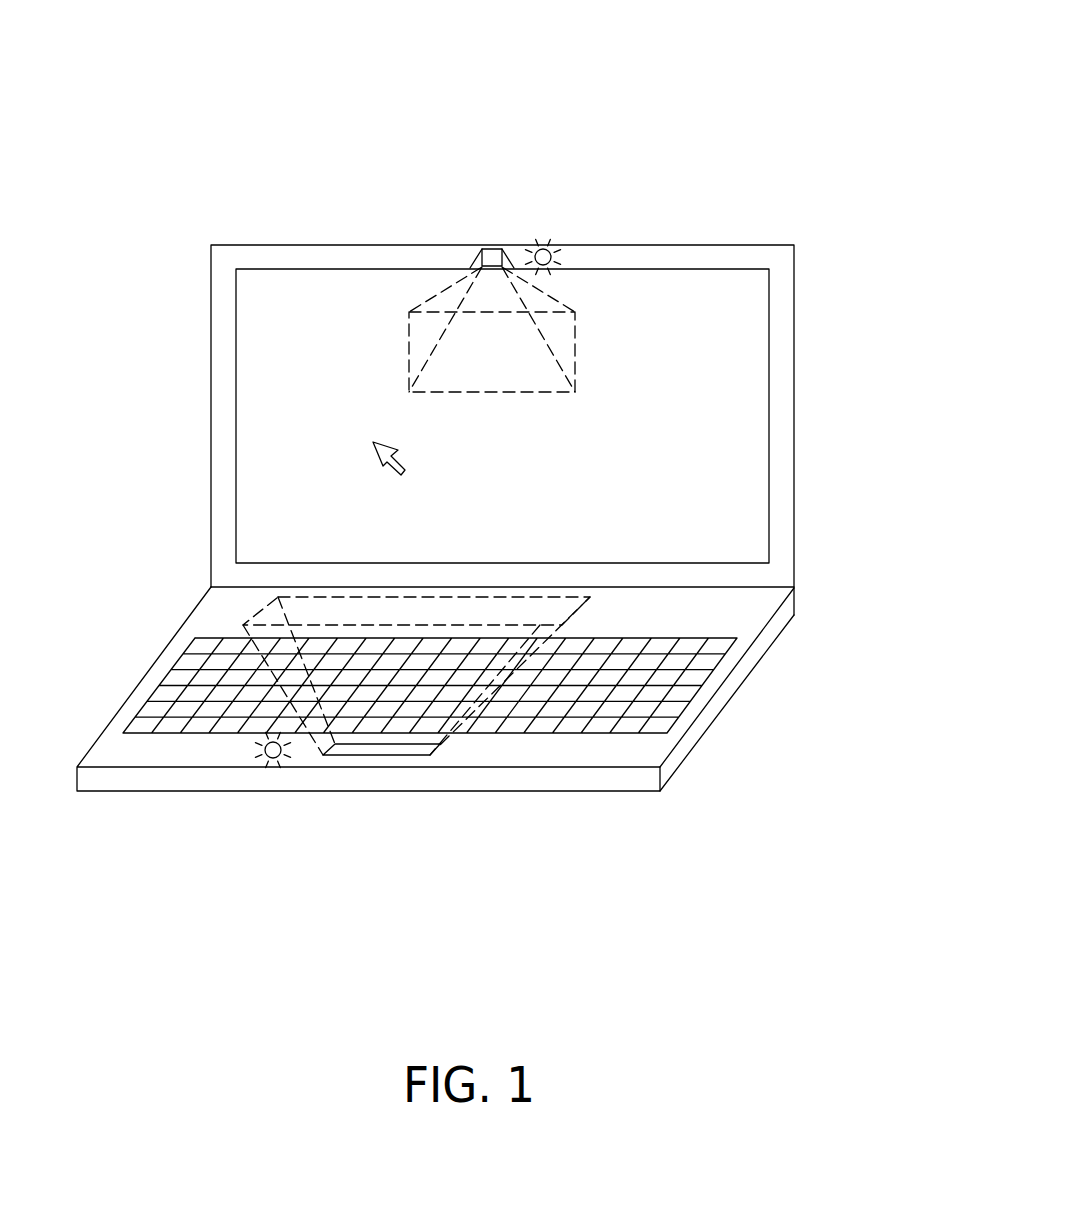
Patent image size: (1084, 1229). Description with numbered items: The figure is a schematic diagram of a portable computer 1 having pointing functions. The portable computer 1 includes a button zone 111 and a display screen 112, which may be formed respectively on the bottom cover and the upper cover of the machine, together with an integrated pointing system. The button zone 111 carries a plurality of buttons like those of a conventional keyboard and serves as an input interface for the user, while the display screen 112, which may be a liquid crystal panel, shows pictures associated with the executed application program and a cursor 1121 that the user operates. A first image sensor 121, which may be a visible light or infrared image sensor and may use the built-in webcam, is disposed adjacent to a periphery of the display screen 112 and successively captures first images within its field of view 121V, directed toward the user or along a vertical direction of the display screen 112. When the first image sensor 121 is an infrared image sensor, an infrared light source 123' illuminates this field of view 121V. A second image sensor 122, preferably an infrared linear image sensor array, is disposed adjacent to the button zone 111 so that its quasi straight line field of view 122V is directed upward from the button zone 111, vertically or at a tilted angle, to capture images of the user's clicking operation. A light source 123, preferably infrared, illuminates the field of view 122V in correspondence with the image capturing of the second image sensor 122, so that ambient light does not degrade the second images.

The portable computer 1 is at (715, 73).
The button zone 111 is at (175, 677).
The display screen 112 is at (237, 463).
The cursor 1121 is at (373, 442).
The first image sensor 121 is at (492, 249).
The field of view of the first image sensor 121V is at (408, 337).
The second image sensor 122 is at (415, 756).
The field of view of the second image sensor 122V is at (245, 623).
The light source 123 is at (251, 813).
The infrared light source 123' is at (574, 192).